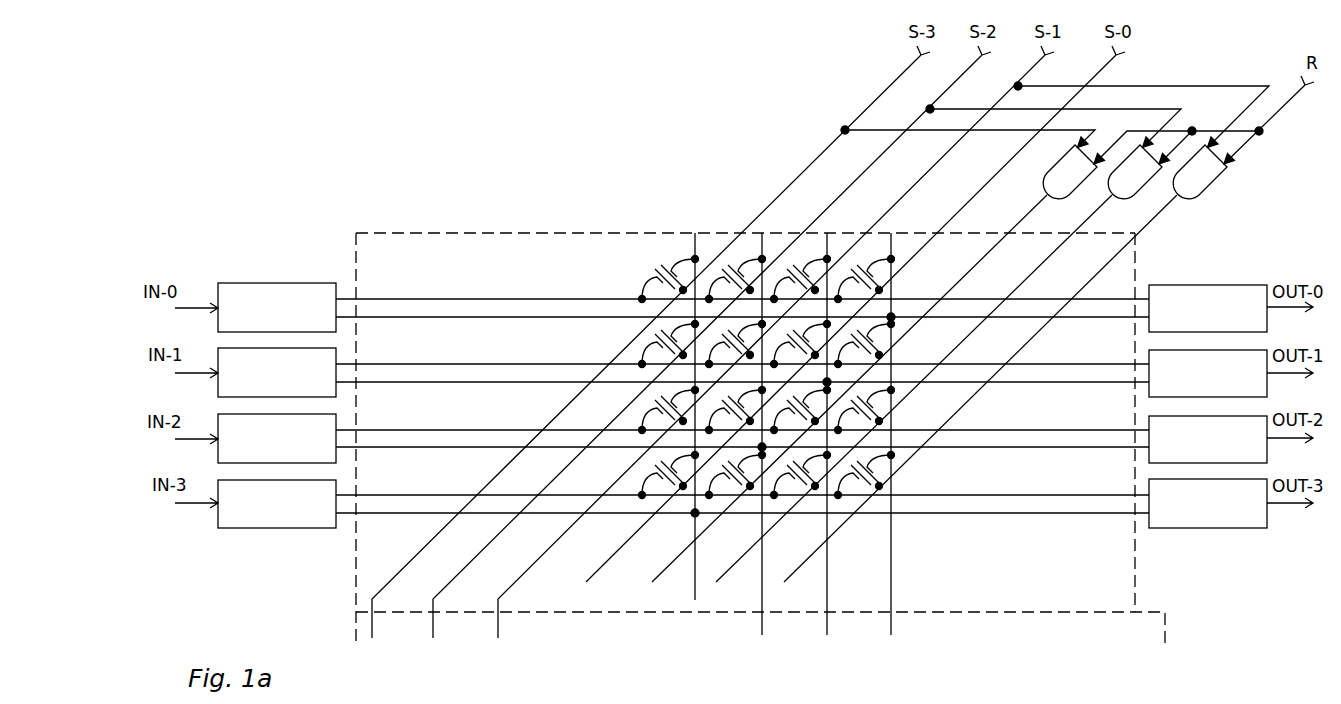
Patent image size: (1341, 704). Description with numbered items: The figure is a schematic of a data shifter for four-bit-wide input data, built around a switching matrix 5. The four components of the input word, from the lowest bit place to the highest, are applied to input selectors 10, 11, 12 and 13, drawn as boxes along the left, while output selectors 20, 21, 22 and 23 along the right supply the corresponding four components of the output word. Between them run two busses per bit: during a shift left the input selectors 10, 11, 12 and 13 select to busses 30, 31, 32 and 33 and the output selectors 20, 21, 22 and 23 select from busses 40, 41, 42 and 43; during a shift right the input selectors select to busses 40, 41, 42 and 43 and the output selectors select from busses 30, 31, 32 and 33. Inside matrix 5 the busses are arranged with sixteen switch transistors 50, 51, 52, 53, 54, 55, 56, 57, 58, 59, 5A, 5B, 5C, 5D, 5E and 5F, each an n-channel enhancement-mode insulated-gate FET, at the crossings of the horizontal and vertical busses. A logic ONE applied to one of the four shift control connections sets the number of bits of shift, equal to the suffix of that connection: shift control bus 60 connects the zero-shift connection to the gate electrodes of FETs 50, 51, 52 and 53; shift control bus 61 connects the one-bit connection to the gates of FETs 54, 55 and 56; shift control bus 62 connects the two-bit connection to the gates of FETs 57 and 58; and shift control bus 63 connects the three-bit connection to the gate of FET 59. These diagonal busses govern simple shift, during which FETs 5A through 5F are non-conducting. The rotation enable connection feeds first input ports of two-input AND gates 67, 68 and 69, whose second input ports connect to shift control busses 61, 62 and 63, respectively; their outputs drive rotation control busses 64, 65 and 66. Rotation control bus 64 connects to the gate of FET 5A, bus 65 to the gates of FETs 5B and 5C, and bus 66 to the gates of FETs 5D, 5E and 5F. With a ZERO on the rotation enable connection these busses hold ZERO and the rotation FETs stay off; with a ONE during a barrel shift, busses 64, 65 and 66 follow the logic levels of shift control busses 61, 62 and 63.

The switching matrix 5 is at (760, 440).
The input selector 10 is at (219, 282).
The input selector 11 is at (219, 347).
The input selector 12 is at (219, 413).
The input selector 13 is at (219, 479).
The output selector 20 is at (1268, 322).
The output selector 21 is at (1268, 387).
The output selector 22 is at (1268, 453).
The output selector 23 is at (1268, 518).
The bus 30 is at (404, 298).
The bus 31 is at (404, 363).
The bus 32 is at (404, 429).
The bus 33 is at (404, 494).
The bus 40 is at (480, 317).
The bus 41 is at (480, 382).
The bus 42 is at (480, 447).
The bus 43 is at (418, 513).
The switch transistor 50 is at (865, 273).
The switch transistor 51 is at (801, 344).
The switch transistor 52 is at (736, 410).
The switch transistor 53 is at (669, 475).
The switch transistor 54 is at (801, 271).
The switch transistor 55 is at (736, 344).
The switch transistor 56 is at (669, 410).
The switch transistor 57 is at (736, 271).
The switch transistor 58 is at (669, 344).
The switch transistor 59 is at (669, 278).
The switch transistor 5A is at (865, 475).
The switch transistor 5B is at (865, 410).
The switch transistor 5C is at (801, 475).
The switch transistor 5D is at (865, 344).
The switch transistor 5E is at (801, 410).
The switch transistor 5F is at (736, 475).
The shift control bus 60 is at (994, 189).
The shift control bus 61 is at (924, 189).
The shift control bus 62 is at (857, 189).
The shift control bus 63 is at (795, 189).
The rotation control bus 64 is at (1101, 281).
The rotation control bus 65 is at (1037, 281).
The rotation control bus 66 is at (971, 281).
The AND gate 67 is at (1203, 168).
The AND gate 68 is at (1138, 168).
The AND gate 69 is at (1073, 168).